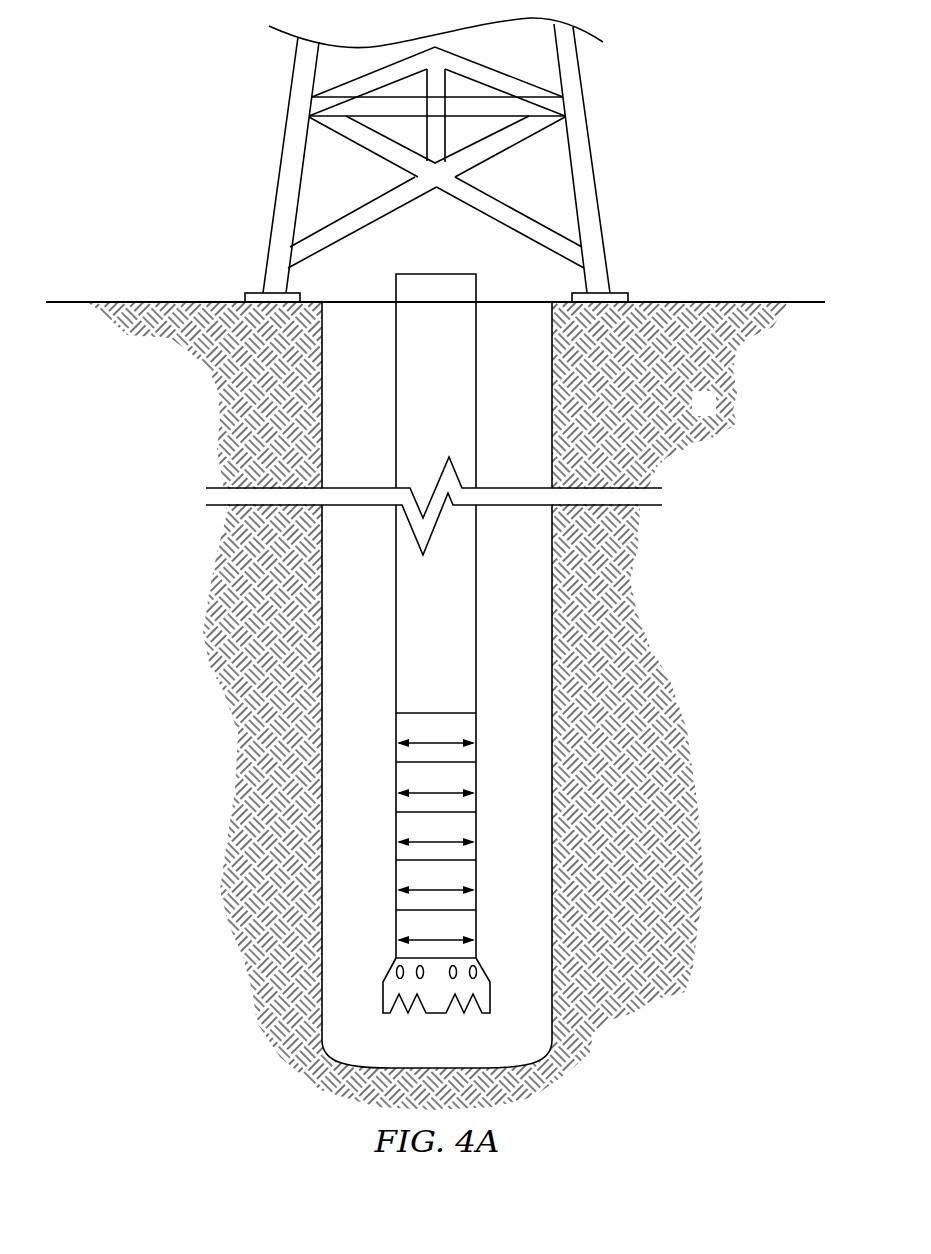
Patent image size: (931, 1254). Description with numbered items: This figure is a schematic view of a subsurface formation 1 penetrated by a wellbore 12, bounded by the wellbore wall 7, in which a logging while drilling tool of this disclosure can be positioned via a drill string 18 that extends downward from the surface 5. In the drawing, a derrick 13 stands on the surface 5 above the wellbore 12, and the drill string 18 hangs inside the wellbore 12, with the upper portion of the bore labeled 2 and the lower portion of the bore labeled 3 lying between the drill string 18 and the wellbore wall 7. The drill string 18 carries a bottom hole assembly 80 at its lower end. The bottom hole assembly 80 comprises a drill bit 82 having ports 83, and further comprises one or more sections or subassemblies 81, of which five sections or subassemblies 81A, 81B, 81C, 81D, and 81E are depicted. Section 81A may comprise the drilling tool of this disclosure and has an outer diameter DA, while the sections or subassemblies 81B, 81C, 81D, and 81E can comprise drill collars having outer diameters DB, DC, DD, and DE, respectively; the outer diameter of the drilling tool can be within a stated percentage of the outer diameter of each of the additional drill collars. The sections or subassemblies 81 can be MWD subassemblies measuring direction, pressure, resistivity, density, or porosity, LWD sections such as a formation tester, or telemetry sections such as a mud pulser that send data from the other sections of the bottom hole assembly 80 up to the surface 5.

The subsurface formation 1 is at (710, 414).
The drill string 2 is at (396, 407).
The annulus 3 is at (352, 583).
The surface 5 is at (686, 302).
The wellbore wall 7 is at (552, 378).
The wellbore 12 is at (345, 341).
The drilling rig derrick 13 is at (583, 80).
The drill string 18 is at (418, 285).
The bottom hole assembly 80 is at (385, 713).
The sections or subassemblies 81 is at (613, 713).
The section 81A is at (478, 740).
The section or subassembly 81B is at (478, 790).
The section or subassembly 81C is at (478, 839).
The section or subassembly 81D is at (478, 888).
The section or subassembly 81E is at (478, 938).
The drill bit 82 is at (463, 1002).
The ports 83 is at (417, 978).